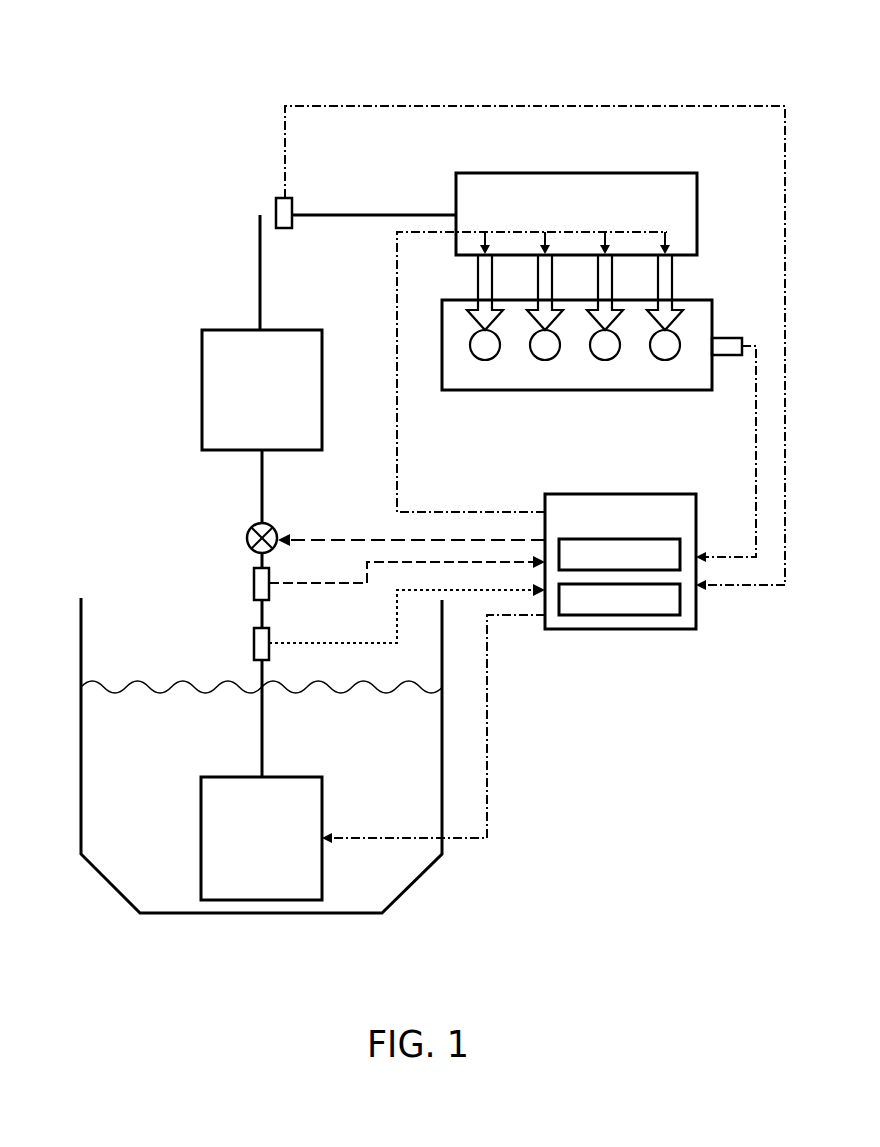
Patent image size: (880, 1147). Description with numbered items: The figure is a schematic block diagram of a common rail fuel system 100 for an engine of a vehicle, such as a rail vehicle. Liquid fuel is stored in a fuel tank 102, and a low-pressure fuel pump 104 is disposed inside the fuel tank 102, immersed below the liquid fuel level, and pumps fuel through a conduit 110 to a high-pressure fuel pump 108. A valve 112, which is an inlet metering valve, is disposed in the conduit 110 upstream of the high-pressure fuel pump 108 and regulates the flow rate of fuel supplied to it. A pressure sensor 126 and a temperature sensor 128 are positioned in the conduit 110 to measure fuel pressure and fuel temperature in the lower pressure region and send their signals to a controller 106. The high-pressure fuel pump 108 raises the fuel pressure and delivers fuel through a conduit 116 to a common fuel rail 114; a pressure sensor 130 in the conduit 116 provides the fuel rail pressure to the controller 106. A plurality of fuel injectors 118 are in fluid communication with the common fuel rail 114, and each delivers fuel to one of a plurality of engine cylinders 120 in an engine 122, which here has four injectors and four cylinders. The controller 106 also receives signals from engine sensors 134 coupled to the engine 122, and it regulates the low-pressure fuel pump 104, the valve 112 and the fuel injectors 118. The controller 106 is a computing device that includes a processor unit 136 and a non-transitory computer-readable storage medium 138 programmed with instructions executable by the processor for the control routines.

The common rail fuel system 100 is at (110, 39).
The fuel tank 102 is at (81, 634).
The low-pressure fuel pump 104 is at (261, 838).
The controller 106 is at (620, 561).
The high-pressure fuel pump 108 is at (262, 390).
The conduit 110 is at (263, 746).
The valve 112 is at (248, 537).
The common fuel rail 114 is at (576, 214).
The conduit 116 is at (450, 214).
The fuel injectors 118 is at (478, 278).
The engine cylinders 120 is at (485, 360).
The engine 122 is at (573, 390).
The pressure sensor 126 is at (268, 628).
The temperature sensor 128 is at (268, 568).
The pressure sensor 130 is at (278, 198).
The engine sensors 134 is at (713, 338).
The processor unit 136 is at (619, 554).
The computer-readable storage medium 138 is at (619, 599).